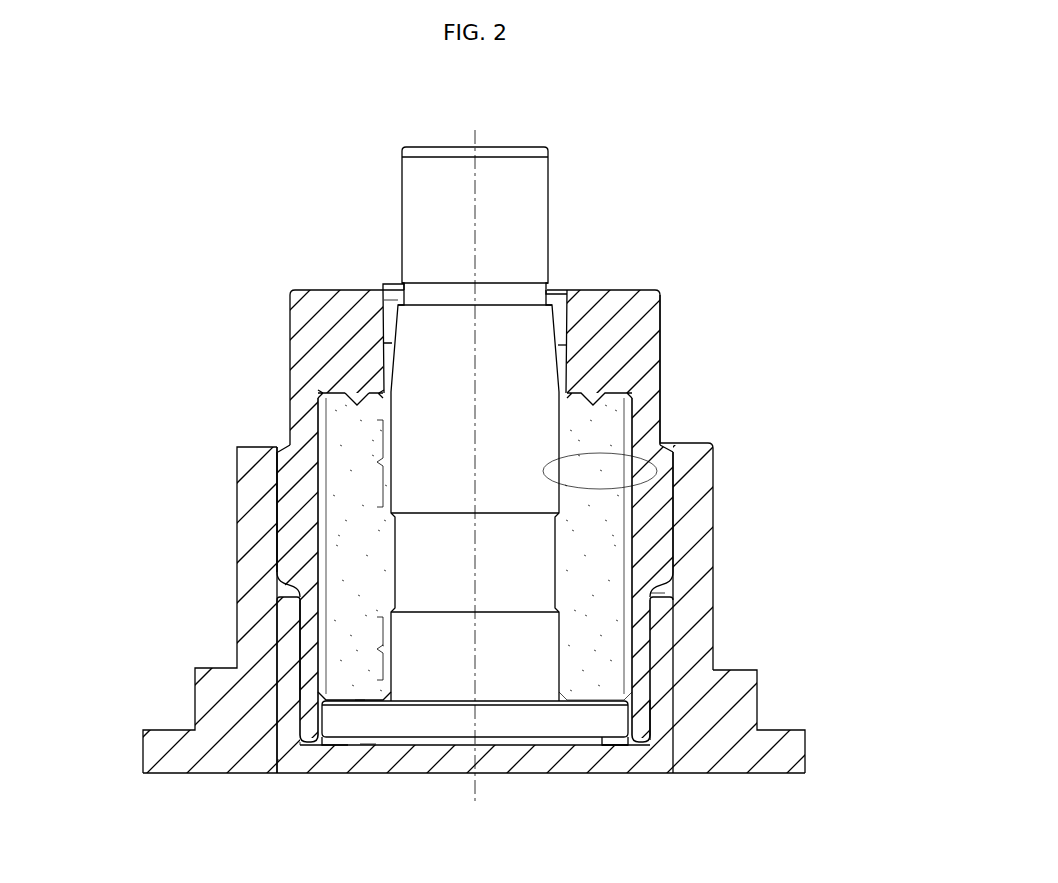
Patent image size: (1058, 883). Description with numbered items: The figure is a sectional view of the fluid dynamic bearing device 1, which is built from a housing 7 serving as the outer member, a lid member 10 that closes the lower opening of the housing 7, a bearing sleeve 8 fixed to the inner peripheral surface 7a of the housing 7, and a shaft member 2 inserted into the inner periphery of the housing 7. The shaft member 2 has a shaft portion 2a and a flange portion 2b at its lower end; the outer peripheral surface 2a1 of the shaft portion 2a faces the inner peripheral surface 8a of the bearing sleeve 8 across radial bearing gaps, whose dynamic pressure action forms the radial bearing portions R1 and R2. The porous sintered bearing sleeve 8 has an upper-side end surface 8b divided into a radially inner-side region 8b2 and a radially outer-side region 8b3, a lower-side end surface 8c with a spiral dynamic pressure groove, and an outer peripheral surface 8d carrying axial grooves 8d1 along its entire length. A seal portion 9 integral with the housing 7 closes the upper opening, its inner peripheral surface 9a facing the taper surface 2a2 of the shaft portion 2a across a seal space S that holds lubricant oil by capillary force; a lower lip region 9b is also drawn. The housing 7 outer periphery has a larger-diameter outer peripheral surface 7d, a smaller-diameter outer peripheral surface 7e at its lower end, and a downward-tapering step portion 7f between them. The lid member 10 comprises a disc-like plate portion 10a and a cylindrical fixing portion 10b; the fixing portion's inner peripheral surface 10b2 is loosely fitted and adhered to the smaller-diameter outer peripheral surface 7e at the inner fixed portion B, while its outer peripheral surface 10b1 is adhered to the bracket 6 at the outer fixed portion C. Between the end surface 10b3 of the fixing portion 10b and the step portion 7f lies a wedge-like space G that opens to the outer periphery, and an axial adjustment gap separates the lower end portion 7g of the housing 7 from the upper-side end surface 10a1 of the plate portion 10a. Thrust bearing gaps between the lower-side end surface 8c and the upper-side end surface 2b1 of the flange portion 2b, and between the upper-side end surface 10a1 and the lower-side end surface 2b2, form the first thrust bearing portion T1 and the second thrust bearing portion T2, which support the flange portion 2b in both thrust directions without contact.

The fluid dynamic bearing device 1 is at (612, 467).
The shaft member 2 is at (500, 426).
The shaft portion 2a is at (475, 141).
The outer peripheral surface of the shaft member 2a1 is at (649, 549).
The taper surface 2a2 is at (584, 295).
The flange portion 2b is at (560, 719).
The upper-side end surface of the flange portion 2b1 is at (549, 671).
The lower-side end surface of the flange portion 2b2 is at (475, 786).
The bracket 6 is at (759, 752).
The housing 7 is at (529, 470).
The inner peripheral surface of the housing 7a is at (698, 521).
The larger-diameter outer peripheral surface 7d is at (229, 512).
The smaller-diameter outer peripheral surface 7e is at (224, 662).
The step portion 7f is at (242, 589).
The lower end portion of the housing 7g is at (300, 616).
The bearing sleeve 8 is at (529, 470).
The inner peripheral surface of the bearing sleeve 8a is at (698, 612).
The upper-side end surface of the bearing sleeve 8b is at (695, 482).
The radially inner-side region 8b2 is at (296, 365).
The radially outer-side region 8b3 is at (289, 387).
The lower-side end surface of the bearing sleeve 8c is at (367, 763).
The outer peripheral surface of the bearing sleeve 8d is at (695, 570).
The axial grooves 8d1 is at (278, 546).
The seal portion 9 is at (347, 343).
The inner peripheral surface of the seal portion 9a is at (394, 291).
The seal lower lip 9b is at (303, 413).
The lid member 10 is at (529, 487).
The plate portion 10a is at (475, 790).
The upper-side end surface of the plate portion 10a1 is at (551, 780).
The fixing portion 10b is at (710, 615).
The outer peripheral surface of the fixing portion 10b1 is at (217, 705).
The inner peripheral surface of the fixing portion 10b2 is at (733, 705).
The end surface of the fixing portion 10b3 is at (227, 615).
The inner fixed portion B is at (320, 778).
The outer fixed portion C is at (258, 797).
The wedge-like space G is at (702, 593).
The seal space S is at (384, 270).
The radial bearing portion R1 is at (281, 463).
The lower-side radial bearing portion R2 is at (281, 648).
The first thrust bearing portion T1 is at (255, 685).
The second thrust bearing portion T2 is at (367, 789).